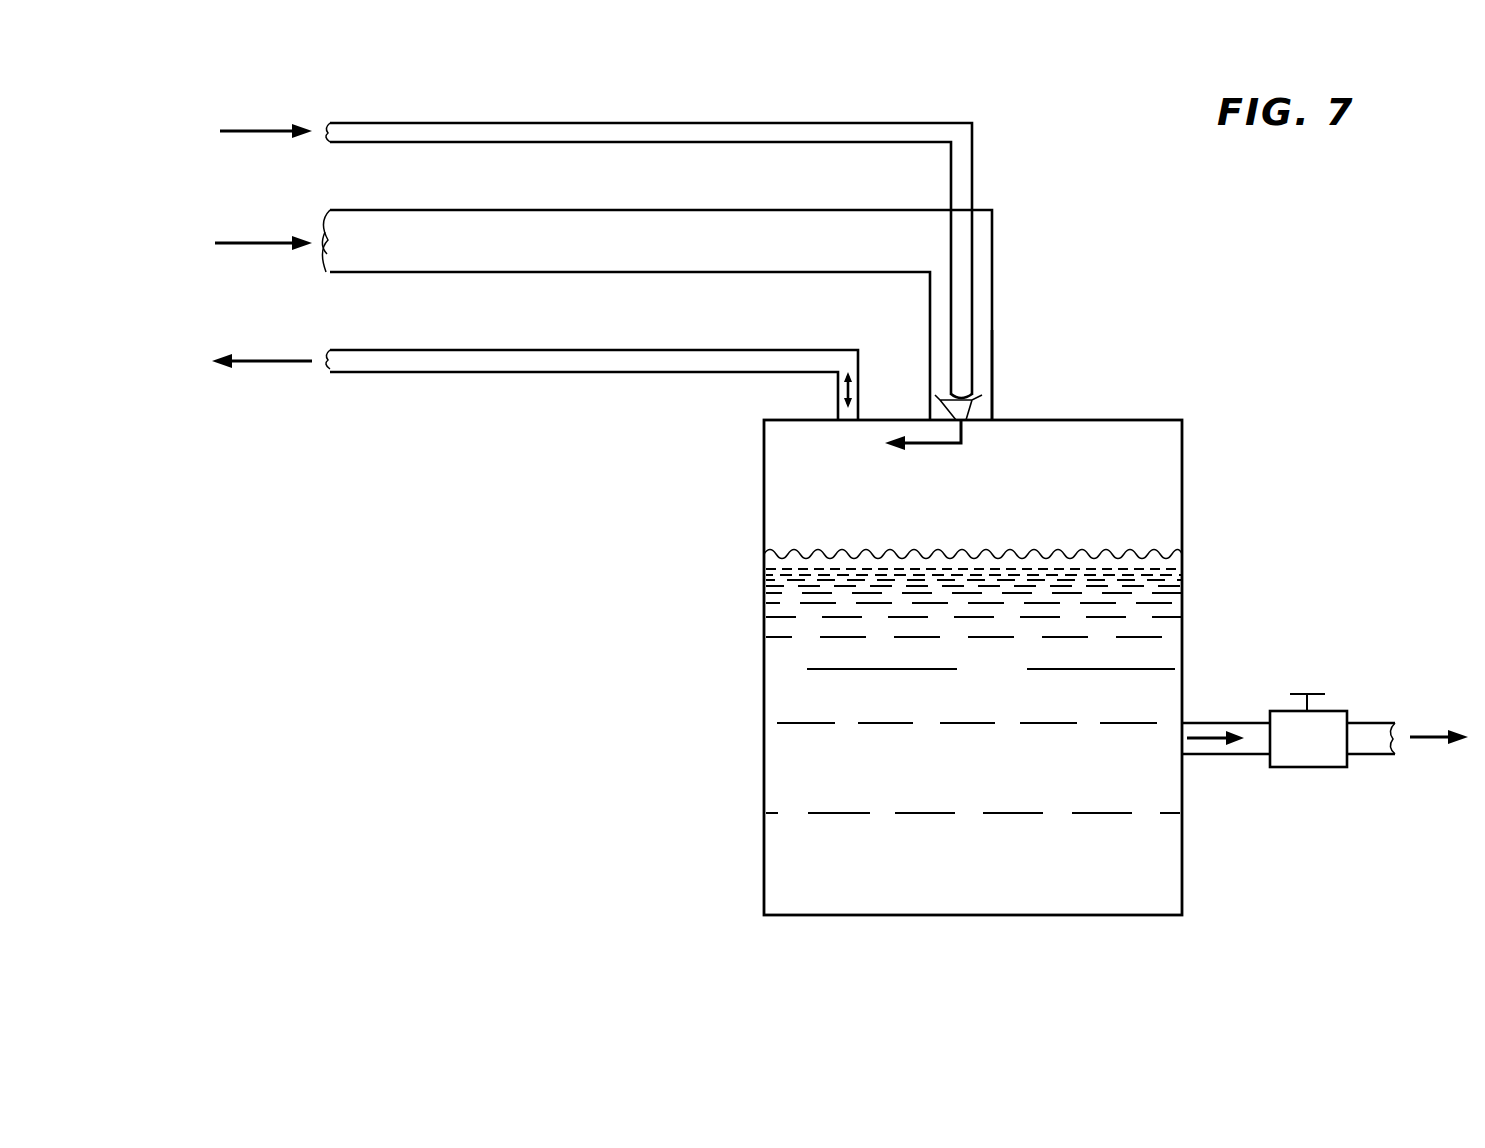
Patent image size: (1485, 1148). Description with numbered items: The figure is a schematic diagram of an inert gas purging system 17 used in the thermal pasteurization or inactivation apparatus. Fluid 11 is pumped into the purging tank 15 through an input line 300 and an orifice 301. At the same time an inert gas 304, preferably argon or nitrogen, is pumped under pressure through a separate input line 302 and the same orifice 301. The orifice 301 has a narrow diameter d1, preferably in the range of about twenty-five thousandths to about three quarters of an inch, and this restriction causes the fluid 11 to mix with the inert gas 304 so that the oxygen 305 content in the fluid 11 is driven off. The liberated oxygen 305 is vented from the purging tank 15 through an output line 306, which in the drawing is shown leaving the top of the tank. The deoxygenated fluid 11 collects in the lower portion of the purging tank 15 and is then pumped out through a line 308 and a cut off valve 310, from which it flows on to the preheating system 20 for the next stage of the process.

The input line 302 is at (450, 130).
The input line 300 is at (420, 208).
The orifice 301 is at (992, 378).
The output line 306 is at (399, 350).
The diameter d1 is at (988, 412).
The inert gas 304 is at (261, 130).
The oxygen 305 is at (258, 361).
The fluid 11 is at (258, 243).
The inert gas purging system 17 is at (767, 478).
The purging tank 15 is at (770, 777).
The line 308 is at (1255, 757).
The cut off valve 310 is at (1318, 652).
The preheating system 20 is at (1432, 736).